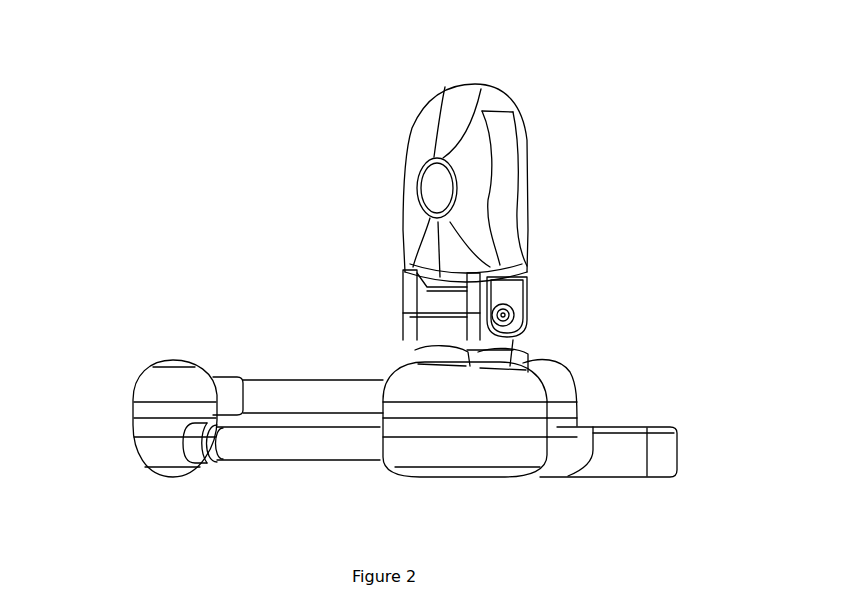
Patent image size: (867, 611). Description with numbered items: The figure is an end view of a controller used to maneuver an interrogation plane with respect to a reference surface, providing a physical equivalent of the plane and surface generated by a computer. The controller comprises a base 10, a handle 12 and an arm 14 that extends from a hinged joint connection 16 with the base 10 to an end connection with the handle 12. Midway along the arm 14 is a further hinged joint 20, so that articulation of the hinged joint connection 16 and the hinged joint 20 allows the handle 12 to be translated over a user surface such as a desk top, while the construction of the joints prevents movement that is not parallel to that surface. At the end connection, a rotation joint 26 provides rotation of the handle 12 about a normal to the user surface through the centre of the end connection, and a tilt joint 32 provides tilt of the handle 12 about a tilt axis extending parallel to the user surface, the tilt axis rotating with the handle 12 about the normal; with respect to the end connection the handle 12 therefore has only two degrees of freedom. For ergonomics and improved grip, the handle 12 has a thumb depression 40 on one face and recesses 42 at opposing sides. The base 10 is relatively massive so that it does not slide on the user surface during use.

The base 10 is at (630, 425).
The handle 12 is at (490, 102).
The arm 14 is at (277, 387).
The hinged joint connection 16 is at (545, 360).
The hinged joint 20 is at (153, 387).
The rotation joint 26 is at (508, 425).
The tilt joint 32 is at (417, 303).
The thumb depression 40 is at (433, 187).
The recesses 42 is at (500, 202).